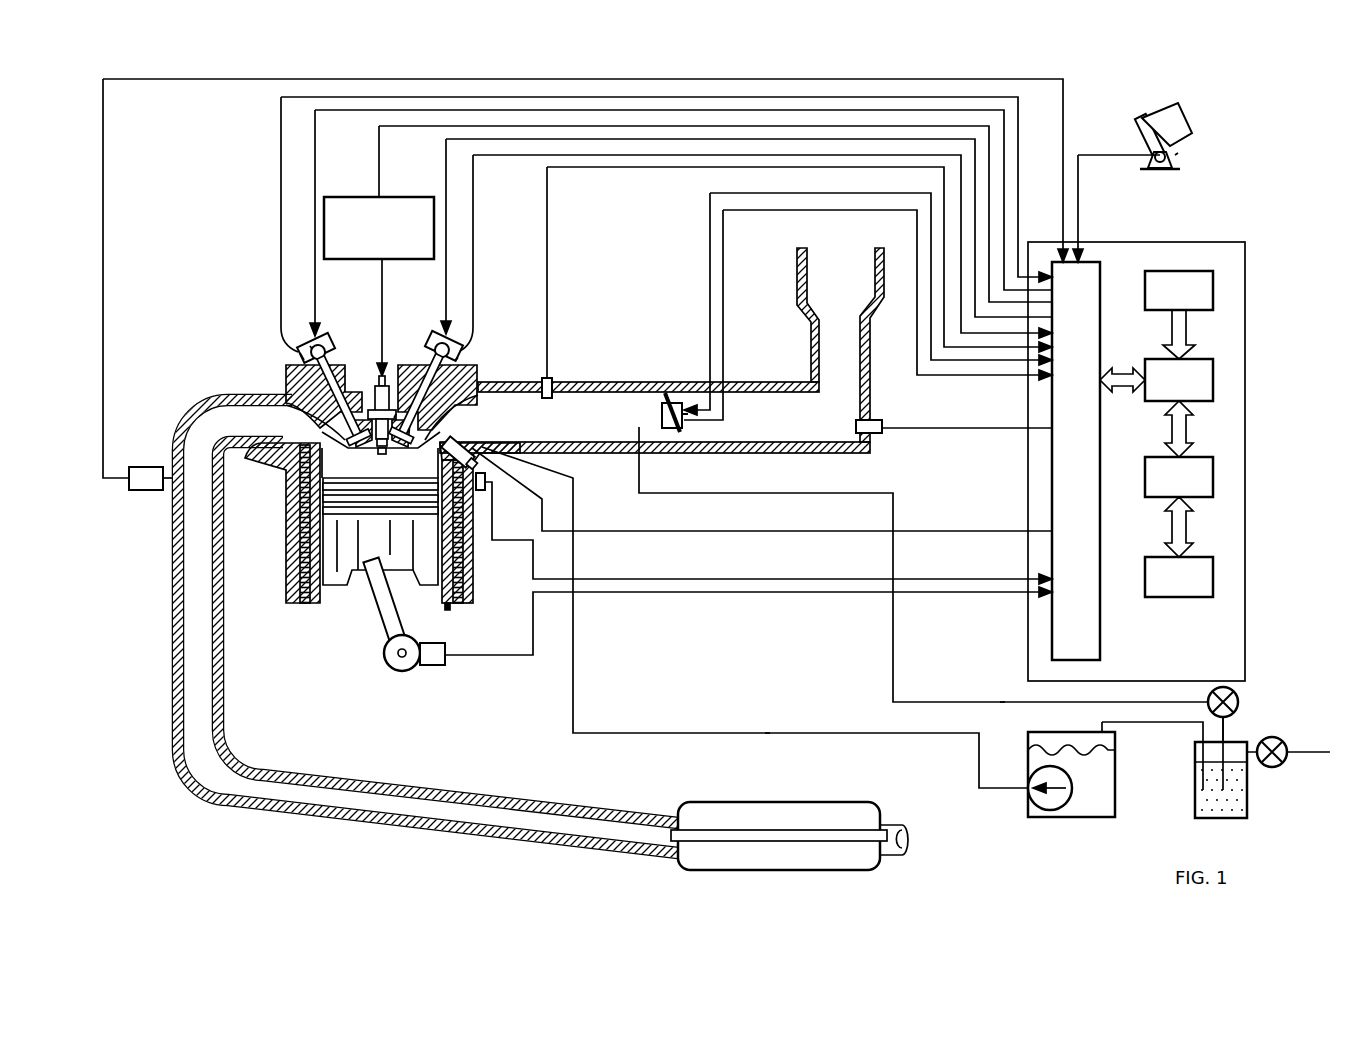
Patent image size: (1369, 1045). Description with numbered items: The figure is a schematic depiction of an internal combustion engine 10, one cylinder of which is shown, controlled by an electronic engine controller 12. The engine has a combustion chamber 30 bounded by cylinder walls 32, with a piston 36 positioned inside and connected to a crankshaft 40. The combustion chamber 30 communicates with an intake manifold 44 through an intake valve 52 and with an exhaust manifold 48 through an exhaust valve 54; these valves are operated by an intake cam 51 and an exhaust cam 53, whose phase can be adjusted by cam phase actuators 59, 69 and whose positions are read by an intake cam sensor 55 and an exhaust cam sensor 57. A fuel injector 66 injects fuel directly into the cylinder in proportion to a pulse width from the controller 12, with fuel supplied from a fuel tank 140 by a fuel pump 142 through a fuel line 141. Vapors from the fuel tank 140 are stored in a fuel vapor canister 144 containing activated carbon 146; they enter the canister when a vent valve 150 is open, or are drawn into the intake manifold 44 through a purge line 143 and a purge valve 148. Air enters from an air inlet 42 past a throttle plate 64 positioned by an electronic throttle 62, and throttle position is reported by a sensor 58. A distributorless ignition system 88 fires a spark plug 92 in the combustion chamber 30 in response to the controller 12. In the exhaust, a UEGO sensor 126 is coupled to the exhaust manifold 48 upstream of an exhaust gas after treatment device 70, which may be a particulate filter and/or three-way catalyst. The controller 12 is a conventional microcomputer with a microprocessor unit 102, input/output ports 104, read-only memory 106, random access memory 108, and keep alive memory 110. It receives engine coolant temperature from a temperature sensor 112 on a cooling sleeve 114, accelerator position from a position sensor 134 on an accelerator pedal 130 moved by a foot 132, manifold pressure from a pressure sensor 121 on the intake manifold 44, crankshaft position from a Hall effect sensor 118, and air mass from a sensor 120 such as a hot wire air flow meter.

The internal combustion engine 10 is at (218, 314).
The electronic engine controller 12 is at (1238, 243).
The combustion chamber 30 is at (292, 555).
The cylinder walls 32 is at (327, 590).
The piston 36 is at (365, 556).
The crankshaft 40 is at (392, 672).
The air inlet 42 is at (851, 294).
The intake manifold 44 is at (597, 431).
The exhaust manifold 48 is at (268, 436).
The intake cam 51 is at (438, 335).
The intake valve 52 is at (445, 424).
The exhaust cam 53 is at (326, 336).
The exhaust valve 54 is at (290, 396).
The intake cam sensor 55 is at (458, 358).
The exhaust cam sensor 57 is at (300, 353).
The throttle position sensor 58 is at (688, 420).
The cam phase actuator 59 is at (396, 414).
The electronic throttle 62 is at (668, 398).
The throttle plate 64 is at (680, 400).
The fuel injector 66 is at (500, 470).
The cam phase actuator 69 is at (310, 346).
The exhaust gas after treatment device 70 is at (735, 870).
The distributorless ignition system 88 is at (345, 197).
The spark plug 92 is at (389, 372).
The microprocessor unit 102 is at (1213, 380).
The input/output ports 104 is at (1101, 270).
The read-only memory 106 is at (1213, 290).
The random access memory 108 is at (1213, 478).
The keep alive memory 110 is at (1213, 577).
The temperature sensor 112 is at (479, 492).
The cooling sleeve 114 is at (471, 580).
The Hall effect sensor 118 is at (428, 667).
The air mass sensor 120 is at (880, 433).
The pressure sensor 121 is at (545, 377).
The Universal Exhaust Gas Oxygen sensor 126 is at (143, 467).
The accelerator pedal 130 is at (1142, 133).
The foot 132 is at (1190, 122).
The position sensor 134 is at (1178, 153).
The fuel tank 140 is at (1112, 772).
The fuel line 141 is at (765, 733).
The fuel pump 142 is at (1060, 806).
The purge line 143 is at (1000, 702).
The fuel vapor canister 144 is at (1223, 767).
The activated carbon 146 is at (1246, 795).
The purge valve 148 is at (1240, 698).
The vent valve 150 is at (1287, 748).